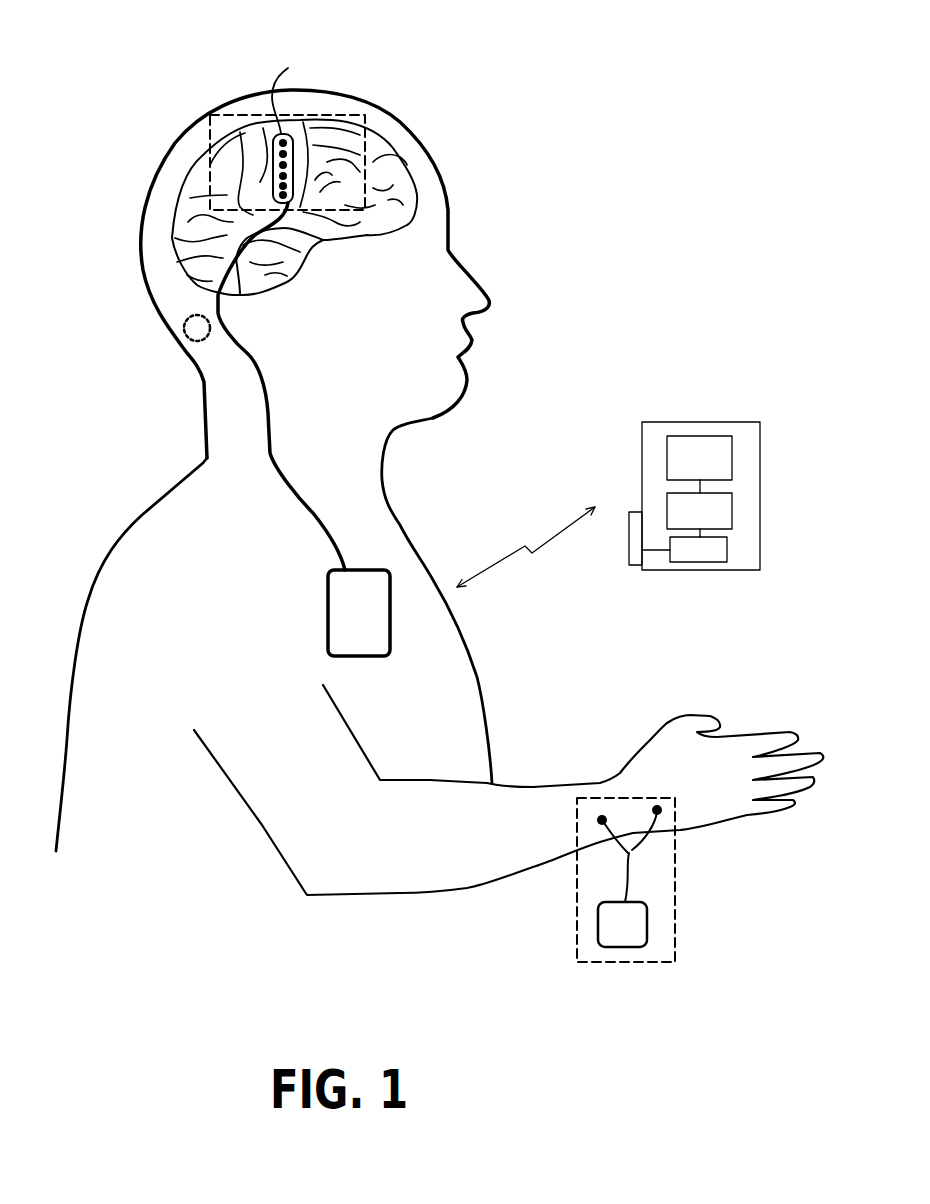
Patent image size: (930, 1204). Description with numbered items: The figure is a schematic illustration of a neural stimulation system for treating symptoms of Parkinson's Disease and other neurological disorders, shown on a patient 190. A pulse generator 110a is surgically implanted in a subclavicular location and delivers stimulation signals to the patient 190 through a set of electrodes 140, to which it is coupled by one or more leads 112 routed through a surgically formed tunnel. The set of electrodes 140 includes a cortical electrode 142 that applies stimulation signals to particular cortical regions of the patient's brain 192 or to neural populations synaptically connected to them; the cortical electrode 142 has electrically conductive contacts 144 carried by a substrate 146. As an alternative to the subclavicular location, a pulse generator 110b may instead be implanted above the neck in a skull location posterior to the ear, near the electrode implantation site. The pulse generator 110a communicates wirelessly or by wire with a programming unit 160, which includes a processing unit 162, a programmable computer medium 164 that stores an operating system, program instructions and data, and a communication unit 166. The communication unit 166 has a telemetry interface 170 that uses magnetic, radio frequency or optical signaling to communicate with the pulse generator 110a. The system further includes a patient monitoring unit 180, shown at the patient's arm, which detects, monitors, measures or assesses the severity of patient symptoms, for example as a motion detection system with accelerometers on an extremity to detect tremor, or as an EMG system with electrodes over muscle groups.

The patient 190 is at (348, 92).
The patient's brain 192 is at (184, 295).
The set of electrodes 140 is at (210, 147).
The cortical electrode 142 is at (289, 91).
The electrically conductive contacts 144 is at (278, 201).
The substrate 146 is at (272, 186).
The leads 112 is at (350, 547).
The pulse generator 110a is at (380, 618).
The pulse generator 110b is at (186, 350).
The programming unit 160 is at (690, 422).
The processing unit 162 is at (732, 454).
The programmable computer medium 164 is at (732, 510).
The communication unit 166 is at (727, 552).
The telemetry interface 170 is at (625, 557).
The patient monitoring unit 180 is at (677, 898).